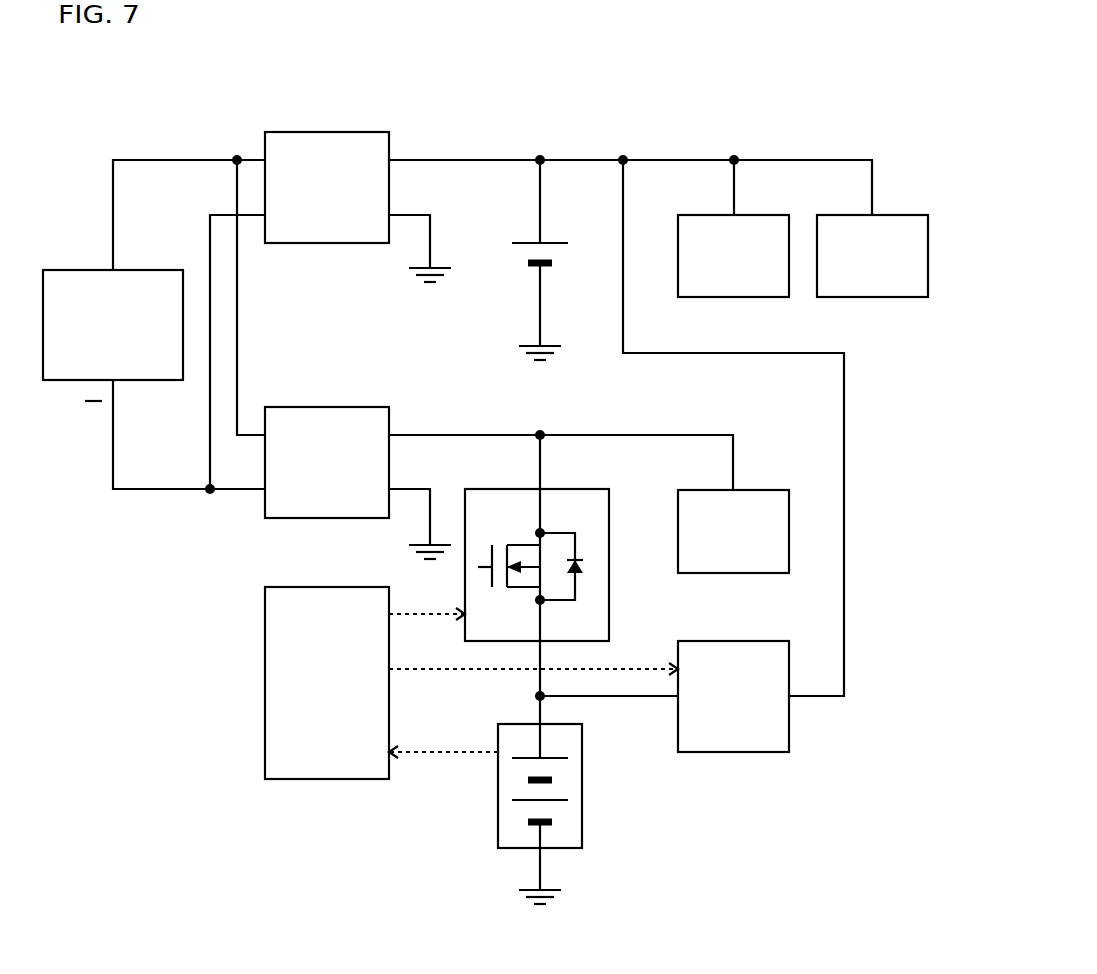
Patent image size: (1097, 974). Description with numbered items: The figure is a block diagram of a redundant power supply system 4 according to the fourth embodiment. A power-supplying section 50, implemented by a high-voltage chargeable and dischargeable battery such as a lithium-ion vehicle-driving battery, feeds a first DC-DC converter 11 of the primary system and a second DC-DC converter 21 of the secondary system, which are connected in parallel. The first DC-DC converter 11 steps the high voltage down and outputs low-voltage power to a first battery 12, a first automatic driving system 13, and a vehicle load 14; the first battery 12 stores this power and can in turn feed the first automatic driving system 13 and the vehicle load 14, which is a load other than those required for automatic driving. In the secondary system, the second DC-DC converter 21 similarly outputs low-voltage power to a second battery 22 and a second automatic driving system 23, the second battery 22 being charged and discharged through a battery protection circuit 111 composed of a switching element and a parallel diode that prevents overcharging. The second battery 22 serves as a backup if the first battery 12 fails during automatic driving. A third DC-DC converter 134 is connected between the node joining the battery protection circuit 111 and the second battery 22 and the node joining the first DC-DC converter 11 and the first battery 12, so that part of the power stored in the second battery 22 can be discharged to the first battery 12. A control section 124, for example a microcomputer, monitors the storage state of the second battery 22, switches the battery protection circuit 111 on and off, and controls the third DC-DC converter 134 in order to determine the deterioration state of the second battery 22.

The redundant power supply system 4 is at (824, 80).
The first DC-DC converter 11 is at (348, 132).
The first battery 12 is at (553, 233).
The first automatic driving system 13 is at (760, 215).
The vehicle load 14 is at (898, 215).
The second DC-DC converter 21 is at (348, 407).
The second battery 22 is at (583, 782).
The second automatic driving system 23 is at (762, 490).
The power-supplying section 50 is at (140, 270).
The battery protection circuit 111 is at (613, 527).
The control section 124 is at (263, 625).
The third DC-DC converter 134 is at (748, 641).